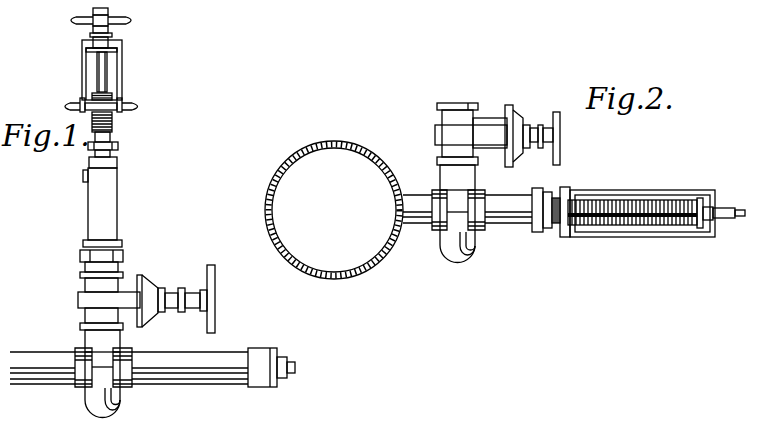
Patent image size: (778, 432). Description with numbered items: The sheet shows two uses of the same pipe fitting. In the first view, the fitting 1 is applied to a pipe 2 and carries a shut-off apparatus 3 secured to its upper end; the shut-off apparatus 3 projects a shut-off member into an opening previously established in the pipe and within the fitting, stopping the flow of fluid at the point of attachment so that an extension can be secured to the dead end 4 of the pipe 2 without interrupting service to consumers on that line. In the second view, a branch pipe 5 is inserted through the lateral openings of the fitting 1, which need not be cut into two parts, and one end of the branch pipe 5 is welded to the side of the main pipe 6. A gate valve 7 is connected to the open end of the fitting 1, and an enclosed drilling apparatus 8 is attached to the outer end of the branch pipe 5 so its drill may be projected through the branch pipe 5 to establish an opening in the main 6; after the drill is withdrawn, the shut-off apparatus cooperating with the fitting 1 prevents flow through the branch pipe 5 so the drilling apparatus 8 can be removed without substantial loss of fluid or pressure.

In FIG. 1, the fitting 1 is at (93, 400).
In FIG. 2, the fitting 1 is at (458, 244).
In FIG. 1, the pipe 2 is at (33, 363).
In FIG. 1, the shut-off apparatus 3 is at (106, 212).
In FIG. 1, the dead end 4 is at (260, 355).
In FIG. 2, the branch pipe 5 is at (515, 212).
In FIG. 2, the main pipe 6 is at (348, 262).
In FIG. 2, the gate valve 7 is at (508, 101).
In FIG. 2, the enclosed drilling apparatus 8 is at (647, 223).